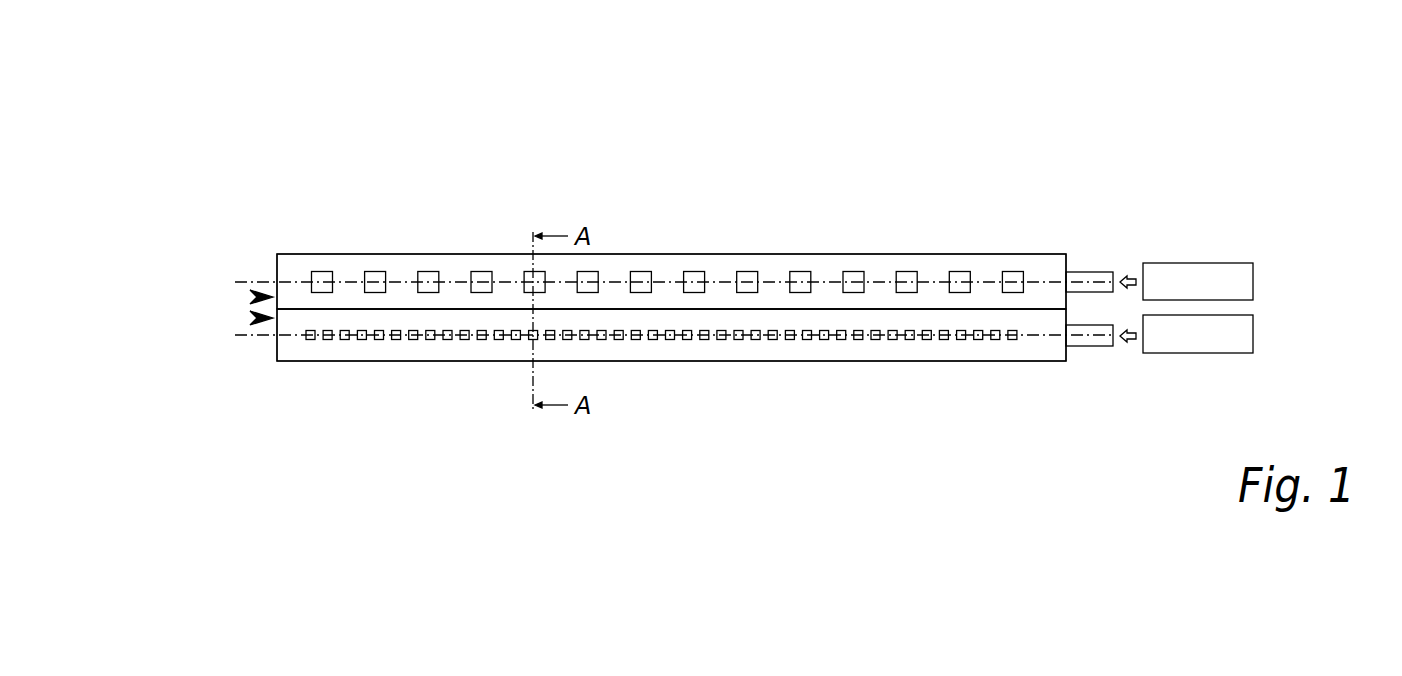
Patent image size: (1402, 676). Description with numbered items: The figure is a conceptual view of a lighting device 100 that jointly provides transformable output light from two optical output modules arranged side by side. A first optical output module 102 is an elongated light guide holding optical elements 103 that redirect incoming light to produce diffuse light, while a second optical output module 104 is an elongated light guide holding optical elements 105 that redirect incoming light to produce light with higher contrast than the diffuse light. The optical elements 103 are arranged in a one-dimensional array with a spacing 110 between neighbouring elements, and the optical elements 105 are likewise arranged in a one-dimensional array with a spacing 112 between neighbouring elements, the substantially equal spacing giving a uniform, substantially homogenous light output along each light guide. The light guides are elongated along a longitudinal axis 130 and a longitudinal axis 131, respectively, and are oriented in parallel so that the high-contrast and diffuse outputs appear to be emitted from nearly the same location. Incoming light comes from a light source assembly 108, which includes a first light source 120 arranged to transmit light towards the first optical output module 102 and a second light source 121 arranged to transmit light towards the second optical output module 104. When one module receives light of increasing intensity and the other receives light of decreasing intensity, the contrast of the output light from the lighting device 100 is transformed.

The lighting device 100 is at (686, 158).
The first optical output module 102 is at (252, 297).
The optical elements 103 is at (320, 272).
The second optical output module 104 is at (252, 318).
The optical elements 105 is at (310, 341).
The light source assembly 108 is at (1290, 249).
The spacing 110 is at (504, 280).
The spacing 112 is at (420, 340).
The first light source 120 is at (1190, 354).
The second light source 121 is at (1190, 262).
The longitudinal axis 130 is at (253, 282).
The longitudinal axis 131 is at (257, 337).